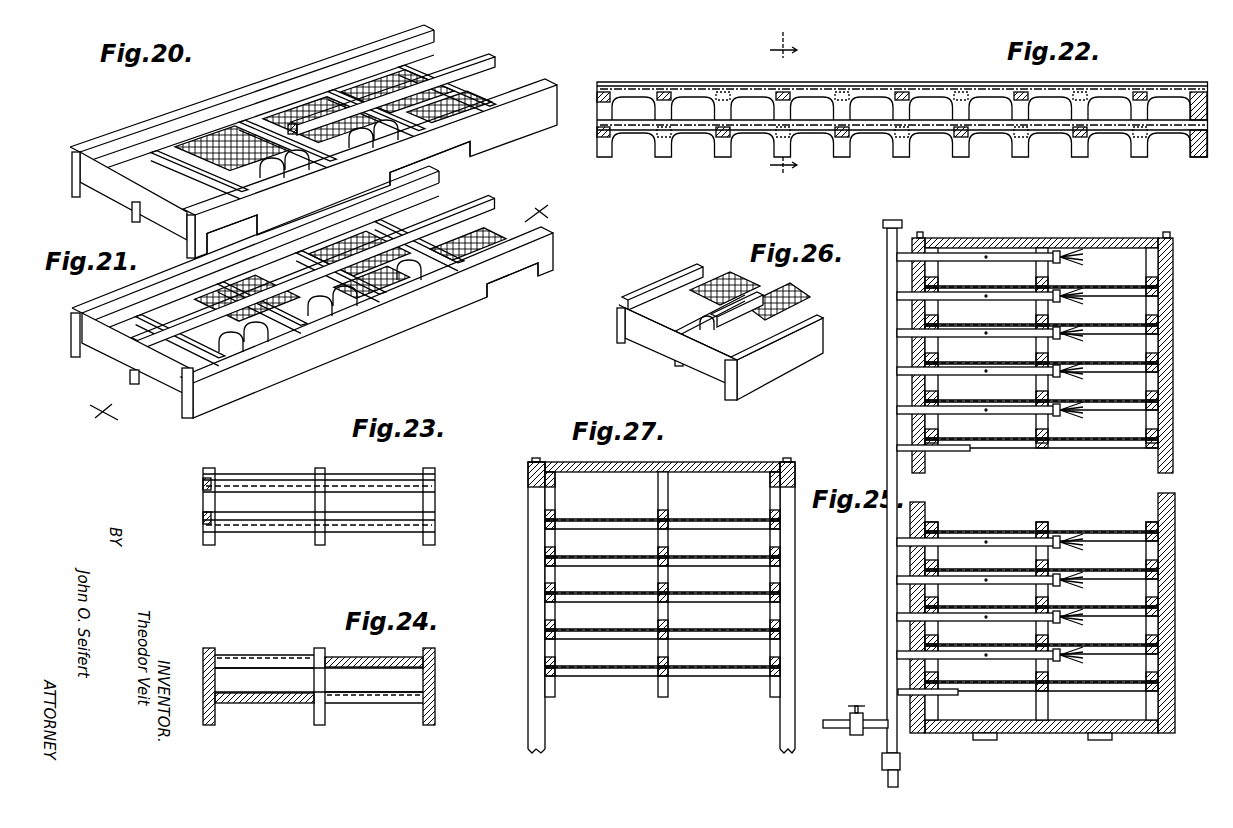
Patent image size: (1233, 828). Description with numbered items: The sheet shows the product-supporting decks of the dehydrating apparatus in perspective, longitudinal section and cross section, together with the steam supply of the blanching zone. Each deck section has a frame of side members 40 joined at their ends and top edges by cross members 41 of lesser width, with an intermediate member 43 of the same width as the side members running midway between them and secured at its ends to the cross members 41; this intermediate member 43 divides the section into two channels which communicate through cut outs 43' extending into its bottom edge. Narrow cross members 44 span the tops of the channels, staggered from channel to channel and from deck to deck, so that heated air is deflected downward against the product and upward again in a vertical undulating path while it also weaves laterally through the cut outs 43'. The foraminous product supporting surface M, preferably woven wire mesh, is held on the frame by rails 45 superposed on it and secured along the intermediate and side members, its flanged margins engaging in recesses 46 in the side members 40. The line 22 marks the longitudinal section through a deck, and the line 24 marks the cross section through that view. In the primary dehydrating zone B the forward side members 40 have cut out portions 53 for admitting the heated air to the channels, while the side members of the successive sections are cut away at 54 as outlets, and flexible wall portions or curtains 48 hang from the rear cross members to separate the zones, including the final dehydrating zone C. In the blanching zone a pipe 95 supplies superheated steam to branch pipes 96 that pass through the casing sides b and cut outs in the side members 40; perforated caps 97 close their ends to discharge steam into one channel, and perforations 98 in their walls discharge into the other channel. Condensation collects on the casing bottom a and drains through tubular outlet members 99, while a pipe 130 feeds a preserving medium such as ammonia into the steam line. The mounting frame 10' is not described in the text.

In FIG. 20, the side members 40 is at (125, 145).
In FIG. 21, the side members 40 is at (73, 343).
In FIG. 26, the side members 40 is at (617, 333).
In FIG. 23, the side members 40 is at (435, 530).
In FIG. 24, the side members 40 is at (215, 720).
In FIG. 27, the side members 40 is at (560, 498).
In FIG. 25, the side members 40 is at (938, 436).
In FIG. 20, the cross members 41 is at (505, 78).
In FIG. 21, the cross members 41 is at (460, 207).
In FIG. 22, the cross members 41 is at (597, 115).
In FIG. 26, the cross members 41 is at (740, 284).
In FIG. 23, the cross members 41 is at (395, 525).
In FIG. 20, the intermediate member 43 is at (323, 132).
In FIG. 21, the intermediate member 43 is at (300, 293).
In FIG. 22, the intermediate member 43 is at (901, 130).
In FIG. 26, the intermediate member 43 is at (697, 343).
In FIG. 23, the intermediate member 43 is at (343, 503).
In FIG. 24, the intermediate member 43 is at (343, 683).
In FIG. 27, the intermediate member 43 is at (685, 543).
In FIG. 21, the cut outs 43' is at (283, 339).
In FIG. 22, the cut outs 43' is at (854, 119).
In FIG. 26, the cut outs 43' is at (722, 336).
In FIG. 27, the cut outs 43' is at (692, 496).
In FIG. 20, the cross members 44 is at (178, 156).
In FIG. 21, the cross members 44 is at (200, 305).
In FIG. 22, the cross members 44 is at (664, 92).
In FIG. 24, the cross members 44 is at (345, 658).
In FIG. 27, the cross members 44 is at (722, 525).
In FIG. 20, the rails 45 is at (330, 75).
In FIG. 21, the rails 45 is at (92, 308).
In FIG. 22, the rails 45 is at (1115, 84).
In FIG. 26, the rails 45 is at (638, 297).
In FIG. 23, the rails 45 is at (215, 475).
In FIG. 24, the rails 45 is at (215, 656).
In FIG. 27, the rails 45 is at (565, 585).
In FIG. 25, the rails 45 is at (1147, 320).
In FIG. 23, the recesses 46 is at (203, 518).
In FIG. 24, the recesses 46 is at (435, 700).
In FIG. 22, the flexible wall portions 48 is at (1200, 150).
In FIG. 20, the cut out portions 53 is at (150, 150).
In FIG. 20, the cut outs 54 is at (400, 165).
In FIG. 21, the cut outs 54 is at (495, 282).
In FIG. 25, the pipe 95 is at (887, 400).
In FIG. 25, the branch pipes 96 is at (965, 300).
In FIG. 25, the perforated caps 97 is at (1060, 373).
In FIG. 25, the perforations 98 is at (986, 333).
In FIG. 25, the tubular outlet members 99 is at (1100, 740).
In FIG. 25, the pipe 130 is at (838, 730).
In FIG. 20, the product supporting surface M is at (432, 66).
In FIG. 22, the product supporting surface M is at (695, 86).
In FIG. 26, the product supporting surface M is at (712, 285).
In FIG. 23, the product supporting surface M is at (345, 480).
In FIG. 24, the product supporting surface M is at (260, 655).
In FIG. 27, the product supporting surface M is at (635, 525).
In FIG. 25, the product supporting surface M is at (1108, 398).
In FIG. 20, the primary dehydrating zone B is at (165, 125).
In FIG. 27, the final dehydrating zone C is at (660, 466).
In FIG. 25, the final dehydrating zone C is at (1015, 238).
In FIG. 27, the sides b is at (528, 598).
In FIG. 25, the sides b is at (1173, 375).
In FIG. 25, the bottom a is at (1035, 733).
In FIG. 27, the frame 10' is at (636, 584).
In FIG. 21, the section line 22— 22 is at (323, 305).
In FIG. 22, the section line 24— 24 is at (794, 102).